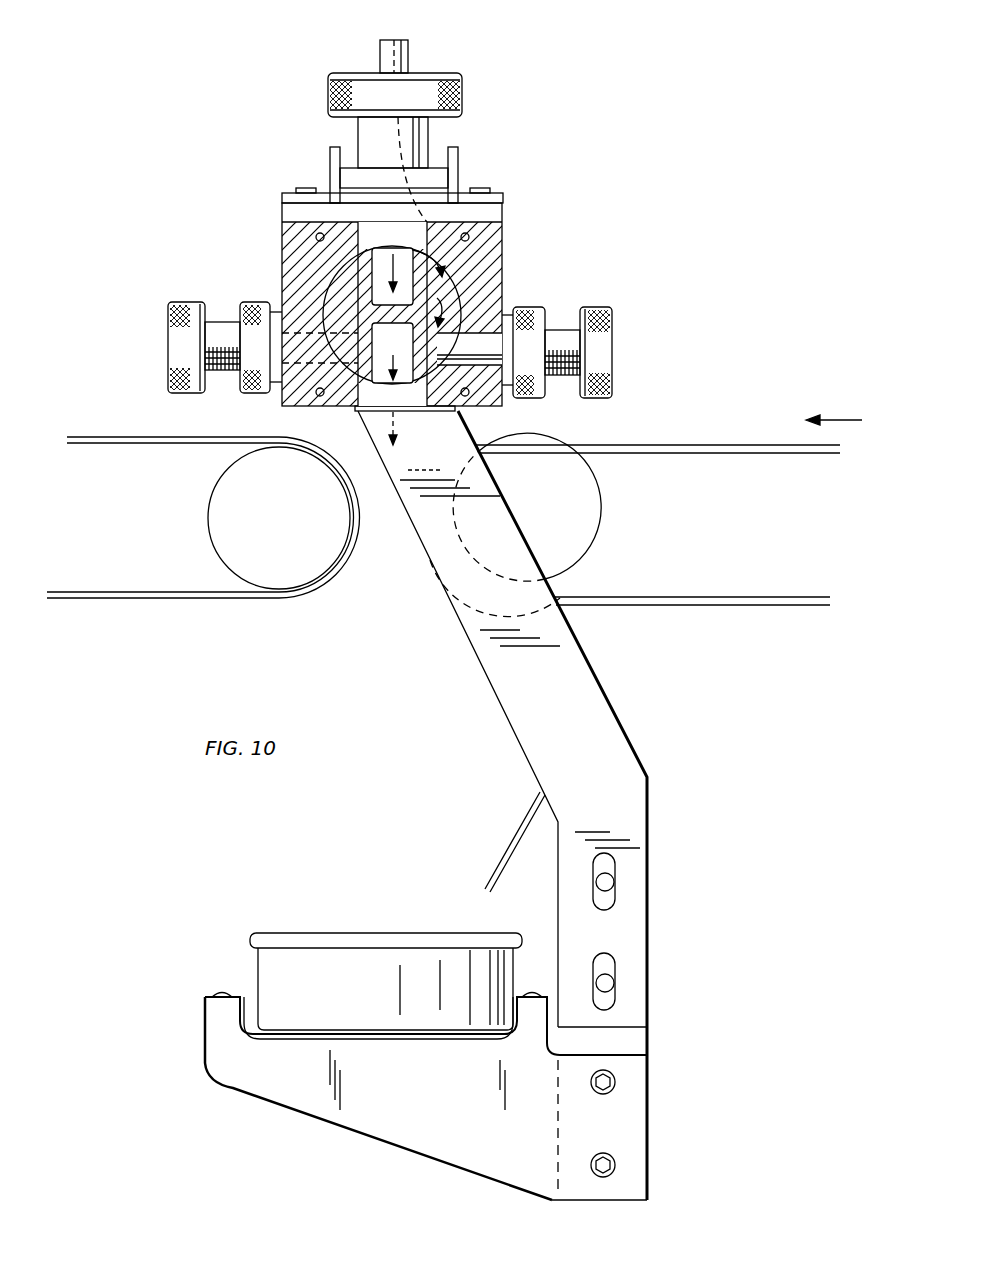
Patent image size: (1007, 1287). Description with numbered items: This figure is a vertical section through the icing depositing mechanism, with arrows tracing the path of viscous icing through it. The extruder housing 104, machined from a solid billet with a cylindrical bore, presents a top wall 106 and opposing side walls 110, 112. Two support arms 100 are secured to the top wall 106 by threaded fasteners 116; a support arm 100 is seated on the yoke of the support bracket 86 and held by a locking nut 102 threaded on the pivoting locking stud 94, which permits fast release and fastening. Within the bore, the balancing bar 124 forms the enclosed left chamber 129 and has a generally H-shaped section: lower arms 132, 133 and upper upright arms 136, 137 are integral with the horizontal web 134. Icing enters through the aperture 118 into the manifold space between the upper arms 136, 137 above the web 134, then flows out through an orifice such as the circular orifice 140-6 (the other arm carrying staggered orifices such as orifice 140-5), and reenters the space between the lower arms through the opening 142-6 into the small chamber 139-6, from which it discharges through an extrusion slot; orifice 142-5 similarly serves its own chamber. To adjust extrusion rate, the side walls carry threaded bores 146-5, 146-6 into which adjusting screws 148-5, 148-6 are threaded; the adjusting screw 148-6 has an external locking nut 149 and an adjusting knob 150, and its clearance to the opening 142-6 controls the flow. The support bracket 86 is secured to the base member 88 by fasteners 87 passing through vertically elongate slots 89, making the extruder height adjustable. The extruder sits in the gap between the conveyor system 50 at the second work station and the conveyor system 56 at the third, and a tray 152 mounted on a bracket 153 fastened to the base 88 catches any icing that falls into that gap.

The threaded locking stud 94 is at (410, 58).
The locking nut 102 is at (462, 96).
The support arm 100 is at (472, 151).
The threaded fasteners 116 is at (305, 188).
The aperture 118 is at (394, 169).
The housing 104 is at (262, 206).
The top wall 106 is at (425, 304).
The side wall 110 is at (503, 244).
The side wall 112 is at (282, 268).
The balancing bar 124 is at (340, 258).
The circular orifice 140-5 is at (397, 263).
The upper upright arm 137 is at (440, 253).
The circular orifice 140-6 is at (468, 268).
The upper upright arm 136 is at (300, 278).
The small chamber 139-6 is at (500, 300).
The left chamber 129 is at (335, 306).
The adjusting screw 148-5 is at (212, 320).
The adjusting screw 148-6 is at (575, 307).
The web 134 is at (392, 353).
The adjusting knob 150 is at (613, 350).
The conveyor system 56 is at (130, 437).
The threaded bore 146-5 is at (278, 400).
The lower arm 132 is at (338, 402).
The orifice 142-5 is at (346, 441).
The lower arm 133 is at (420, 408).
The orifice 142-6 is at (470, 442).
The threaded bore 146-6 is at (485, 412).
The locking nut 149 is at (538, 398).
The conveyor system 50 is at (655, 445).
The support bracket 86 is at (600, 706).
The tray 152 is at (310, 935).
The vertically elongate slots 89 is at (610, 958).
The fasteners 87 is at (610, 985).
The base member 88 is at (635, 1123).
The bracket 153 is at (378, 1140).